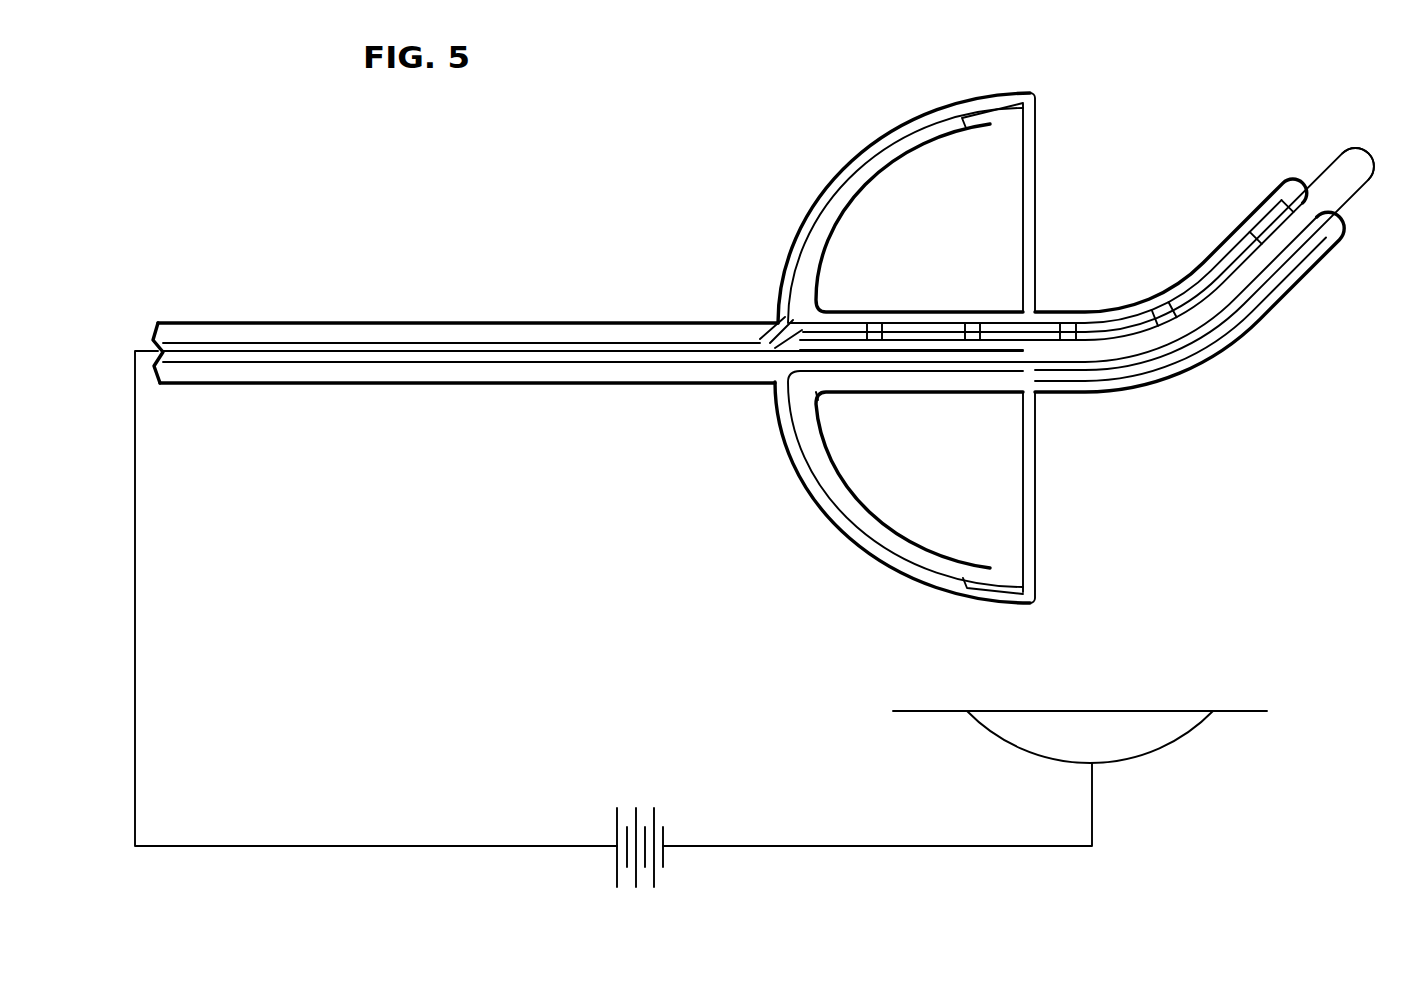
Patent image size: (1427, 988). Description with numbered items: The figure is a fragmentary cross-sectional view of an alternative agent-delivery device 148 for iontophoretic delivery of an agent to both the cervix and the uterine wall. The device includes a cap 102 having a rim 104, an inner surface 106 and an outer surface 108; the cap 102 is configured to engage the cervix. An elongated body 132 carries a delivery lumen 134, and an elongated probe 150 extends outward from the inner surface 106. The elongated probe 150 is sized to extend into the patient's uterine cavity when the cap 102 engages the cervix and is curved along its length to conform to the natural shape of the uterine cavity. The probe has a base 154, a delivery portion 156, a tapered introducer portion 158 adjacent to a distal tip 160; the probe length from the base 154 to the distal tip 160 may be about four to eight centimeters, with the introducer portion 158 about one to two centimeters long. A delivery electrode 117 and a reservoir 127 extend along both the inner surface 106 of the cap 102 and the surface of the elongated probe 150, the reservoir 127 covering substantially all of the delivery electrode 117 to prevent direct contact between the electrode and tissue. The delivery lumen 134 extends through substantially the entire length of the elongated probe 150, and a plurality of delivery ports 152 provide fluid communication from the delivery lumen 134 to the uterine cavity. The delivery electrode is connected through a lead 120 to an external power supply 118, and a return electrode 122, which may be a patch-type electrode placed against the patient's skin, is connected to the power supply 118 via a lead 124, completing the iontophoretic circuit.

The cap 102 is at (848, 177).
The rim 104 is at (1036, 525).
The inner surface 106 is at (987, 112).
The outer surface 108 is at (834, 510).
The delivery electrode 117 is at (810, 236).
The power supply 118 is at (636, 810).
The lead 120 is at (147, 578).
The return electrode 122 is at (1162, 745).
The lead 124 is at (812, 846).
The reservoir 127 is at (900, 530).
The elongated body 132 is at (513, 384).
The delivery lumen 134 is at (353, 337).
The agent-delivery device 148 is at (672, 108).
The elongated probe 150 is at (1143, 358).
The delivery ports 152 is at (780, 322).
The base 154 is at (815, 393).
The delivery portion 156 is at (1100, 390).
The introducer portion 158 is at (1363, 181).
The distal tip 160 is at (1357, 148).